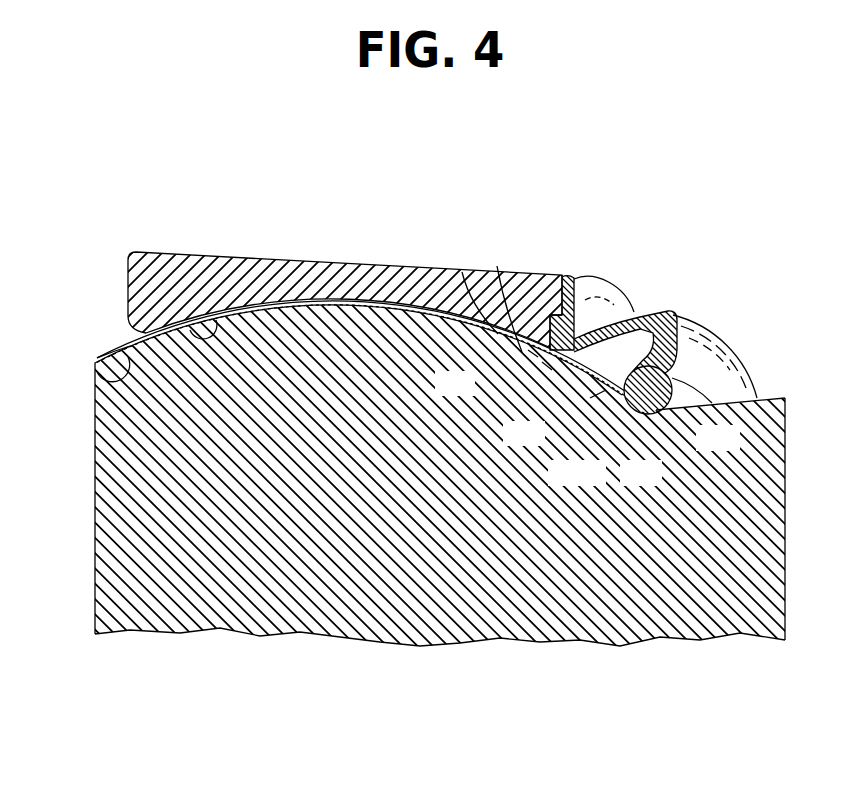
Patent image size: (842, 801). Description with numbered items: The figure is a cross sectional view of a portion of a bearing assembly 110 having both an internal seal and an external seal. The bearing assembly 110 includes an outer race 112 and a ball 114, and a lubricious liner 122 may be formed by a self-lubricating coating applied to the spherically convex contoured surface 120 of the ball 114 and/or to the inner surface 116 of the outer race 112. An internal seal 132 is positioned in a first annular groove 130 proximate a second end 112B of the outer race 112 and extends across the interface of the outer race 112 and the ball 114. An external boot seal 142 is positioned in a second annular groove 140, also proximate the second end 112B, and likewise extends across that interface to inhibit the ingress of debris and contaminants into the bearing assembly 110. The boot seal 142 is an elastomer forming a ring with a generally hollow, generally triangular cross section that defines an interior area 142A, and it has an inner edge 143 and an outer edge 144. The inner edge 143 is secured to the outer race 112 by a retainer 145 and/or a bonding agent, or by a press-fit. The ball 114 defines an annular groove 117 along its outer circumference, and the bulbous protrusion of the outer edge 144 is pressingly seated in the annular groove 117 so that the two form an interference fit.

The bearing assembly 110 is at (268, 655).
The outer race 112 is at (327, 270).
The second end 112B is at (561, 268).
The ball 114 is at (100, 448).
The inner surface 116 is at (192, 325).
The annular groove 117 is at (668, 420).
The spherically convex contoured surface 120 is at (95, 374).
The lubricious liner 122 is at (115, 355).
The first annular groove 130 is at (500, 332).
The internal seal 132 is at (533, 350).
The second annular groove 140 is at (512, 322).
The boot seal 142 is at (650, 320).
The interior area 142A is at (598, 396).
The inner edge 143 is at (547, 363).
The outer edge 144 is at (640, 393).
The retainer 145 is at (570, 280).